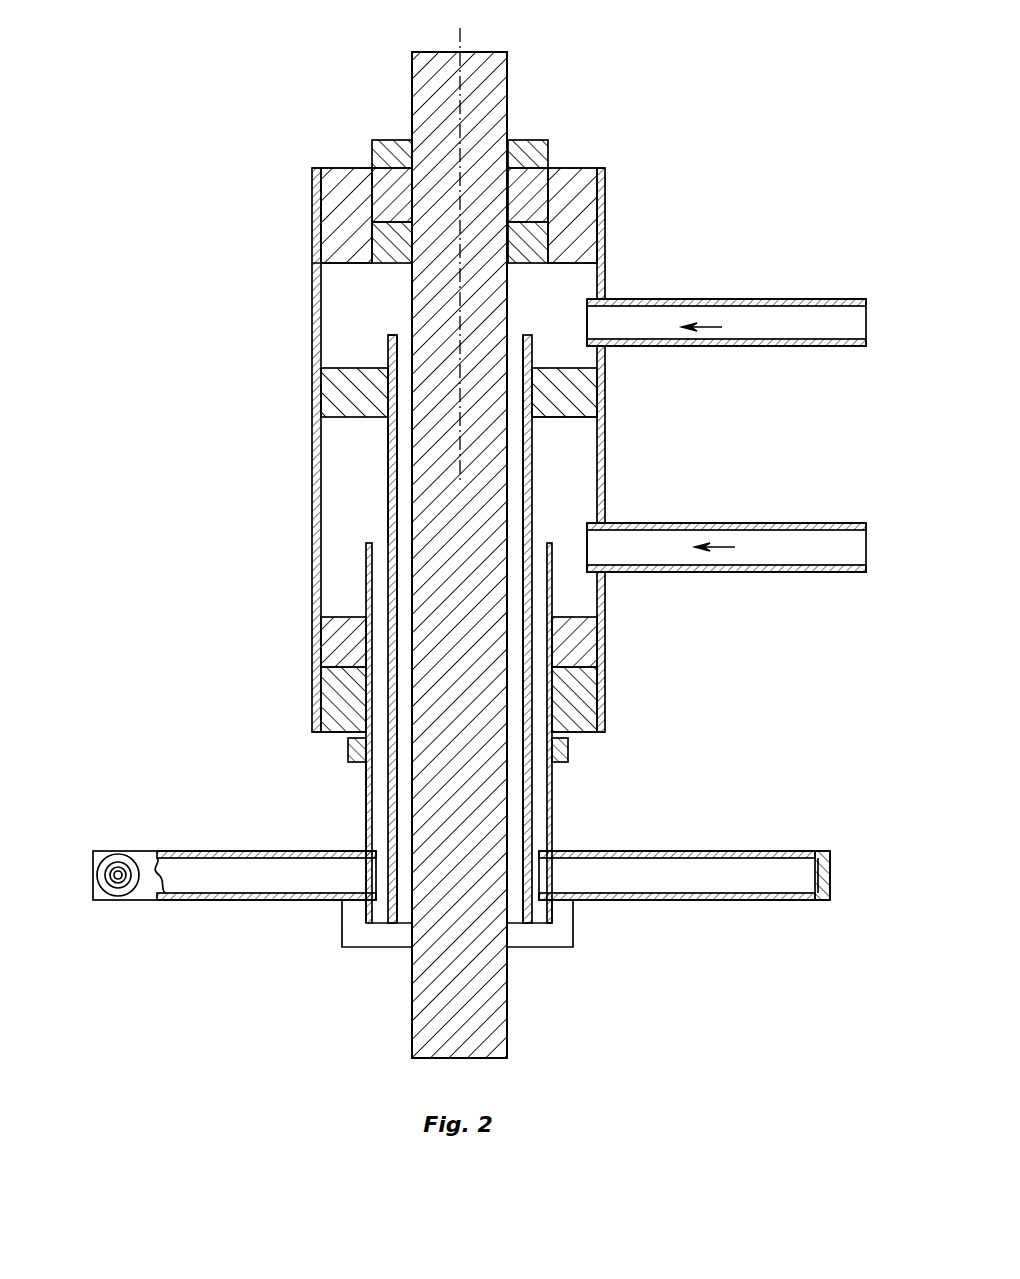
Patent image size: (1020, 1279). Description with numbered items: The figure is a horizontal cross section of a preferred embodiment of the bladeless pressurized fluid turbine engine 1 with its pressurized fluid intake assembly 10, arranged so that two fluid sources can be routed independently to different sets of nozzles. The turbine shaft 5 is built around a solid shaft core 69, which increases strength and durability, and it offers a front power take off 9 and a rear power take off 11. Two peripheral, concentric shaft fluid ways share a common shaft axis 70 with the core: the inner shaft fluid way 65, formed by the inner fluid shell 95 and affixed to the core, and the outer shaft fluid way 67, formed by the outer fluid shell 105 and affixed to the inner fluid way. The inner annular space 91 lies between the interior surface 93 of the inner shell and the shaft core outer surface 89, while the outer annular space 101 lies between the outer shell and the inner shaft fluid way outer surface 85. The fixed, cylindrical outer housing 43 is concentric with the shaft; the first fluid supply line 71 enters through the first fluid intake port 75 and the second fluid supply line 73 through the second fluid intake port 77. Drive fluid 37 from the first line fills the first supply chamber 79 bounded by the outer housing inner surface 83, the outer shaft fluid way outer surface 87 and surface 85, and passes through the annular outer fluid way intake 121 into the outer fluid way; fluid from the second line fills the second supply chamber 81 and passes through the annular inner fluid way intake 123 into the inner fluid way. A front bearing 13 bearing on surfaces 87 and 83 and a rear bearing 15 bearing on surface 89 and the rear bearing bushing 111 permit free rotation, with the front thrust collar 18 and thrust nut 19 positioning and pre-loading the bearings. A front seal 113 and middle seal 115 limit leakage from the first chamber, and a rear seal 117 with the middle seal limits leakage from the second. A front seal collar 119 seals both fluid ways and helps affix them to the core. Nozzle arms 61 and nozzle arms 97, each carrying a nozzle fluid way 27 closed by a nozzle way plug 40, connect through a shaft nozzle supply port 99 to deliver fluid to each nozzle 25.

The pressurized fluid turbine engine 1 is at (313, 455).
The turbine shaft 5 is at (508, 102).
The front power take off 9 is at (505, 1008).
The intake assembly 10 is at (602, 188).
The rear power take off 11 is at (508, 130).
The front bearing 13 is at (577, 737).
The rear bearing 15 is at (545, 160).
The front thrust collar 18 is at (350, 752).
The thrust nut 19 is at (367, 152).
The nozzle 25 is at (112, 899).
The nozzle fluid way 27 is at (220, 875).
The drive fluid 37 is at (705, 320).
The nozzle way plug 40 is at (833, 880).
The outer housing 43 is at (605, 688).
The nozzle arm 61 is at (210, 851).
The inner shaft fluid way 65 is at (400, 488).
The outer shaft fluid way 67 is at (382, 693).
The solid shaft core 69 is at (437, 117).
The shaft axis 70 is at (462, 32).
The first fluid supply line 71 is at (770, 522).
The second fluid supply line 73 is at (777, 348).
The first fluid intake port 75 is at (607, 518).
The second fluid intake port 77 is at (605, 300).
The first supply chamber 79 is at (577, 478).
The second supply chamber 81 is at (607, 255).
The outer housing inner surface 83 is at (600, 583).
The inner shaft fluid way outer surface 85 is at (605, 405).
The outer shaft fluid way outer surface 87 is at (607, 485).
The shaft core outer surface 89 is at (602, 220).
The inner annular space 91 is at (402, 522).
The interior surface of the inner fluid shell 93 is at (398, 460).
The inner fluid shell 95 is at (388, 357).
The nozzle arm 97 is at (272, 900).
The shaft nozzle supply port 99 is at (380, 873).
The outer annular space 101 is at (533, 838).
The outer fluid shell 105 is at (367, 828).
The rear bearing bushing 111 is at (335, 178).
The front seal 113 is at (328, 645).
The middle seal 115 is at (327, 387).
The rear seal 117 is at (380, 245).
The front seal collar 119 is at (573, 940).
The annular outer fluid way intake 121 is at (380, 543).
The annular inner fluid way intake 123 is at (410, 332).